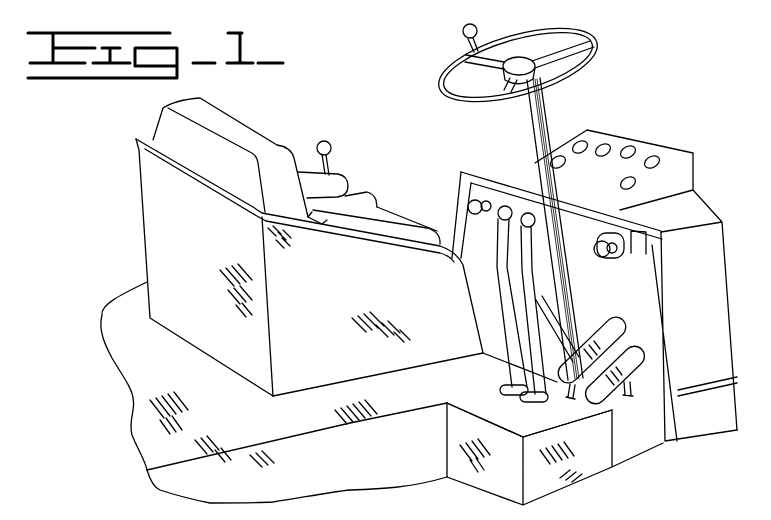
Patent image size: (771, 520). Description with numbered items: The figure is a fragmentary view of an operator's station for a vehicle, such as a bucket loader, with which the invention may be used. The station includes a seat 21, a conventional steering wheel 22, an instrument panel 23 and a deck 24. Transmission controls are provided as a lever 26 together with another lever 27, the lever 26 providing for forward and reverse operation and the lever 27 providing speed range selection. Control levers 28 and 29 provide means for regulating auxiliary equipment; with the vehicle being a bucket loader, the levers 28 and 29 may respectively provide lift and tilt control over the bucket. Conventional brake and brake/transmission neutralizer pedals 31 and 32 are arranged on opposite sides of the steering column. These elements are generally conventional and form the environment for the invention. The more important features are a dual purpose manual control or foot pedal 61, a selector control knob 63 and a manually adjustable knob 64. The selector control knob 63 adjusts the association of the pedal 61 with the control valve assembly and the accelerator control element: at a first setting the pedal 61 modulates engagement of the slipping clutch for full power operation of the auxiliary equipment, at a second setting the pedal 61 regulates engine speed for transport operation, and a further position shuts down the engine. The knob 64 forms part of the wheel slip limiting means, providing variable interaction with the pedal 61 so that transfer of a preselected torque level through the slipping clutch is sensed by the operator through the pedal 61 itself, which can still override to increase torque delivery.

The seat 21 is at (233, 128).
The steering wheel 22 is at (597, 45).
The instrument panel 23 is at (655, 142).
The deck 24 is at (628, 450).
The lever 26 is at (462, 35).
The lever 27 is at (335, 130).
The control lever 28 is at (500, 288).
The control lever 29 is at (528, 302).
The brake pedal 31 is at (547, 317).
The brake/transmission neutralizer pedal 32 is at (574, 380).
The manual control pedal 61 is at (610, 393).
The selector control knob 63 is at (604, 258).
The manually adjustable knob 64 is at (473, 204).